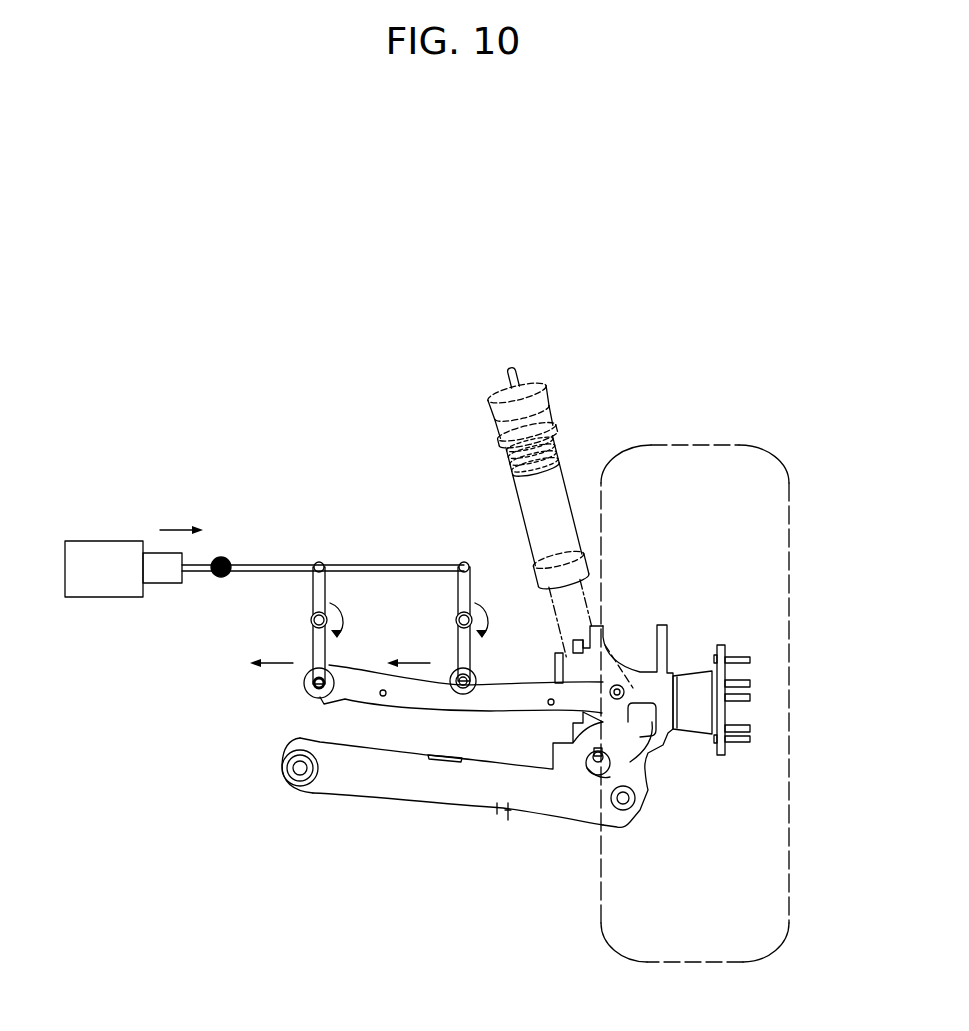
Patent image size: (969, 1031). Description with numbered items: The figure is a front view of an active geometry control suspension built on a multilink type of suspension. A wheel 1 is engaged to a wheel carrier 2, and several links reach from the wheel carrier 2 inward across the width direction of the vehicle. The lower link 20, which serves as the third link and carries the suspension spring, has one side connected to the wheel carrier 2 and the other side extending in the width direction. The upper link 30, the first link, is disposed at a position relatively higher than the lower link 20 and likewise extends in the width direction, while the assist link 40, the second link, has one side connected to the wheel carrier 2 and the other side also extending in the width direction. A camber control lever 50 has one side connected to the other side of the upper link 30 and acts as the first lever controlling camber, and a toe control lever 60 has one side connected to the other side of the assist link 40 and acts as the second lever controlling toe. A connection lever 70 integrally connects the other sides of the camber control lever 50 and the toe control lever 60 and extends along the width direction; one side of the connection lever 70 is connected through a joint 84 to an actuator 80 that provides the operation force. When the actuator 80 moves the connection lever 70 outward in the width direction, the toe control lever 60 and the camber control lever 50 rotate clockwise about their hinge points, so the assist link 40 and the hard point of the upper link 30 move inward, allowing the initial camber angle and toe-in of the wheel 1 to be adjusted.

The wheel 1 is at (697, 441).
The wheel carrier 2 is at (675, 672).
The lower link 20 is at (452, 800).
The upper link 30 is at (407, 712).
The assist link 40 is at (533, 678).
The camber control lever 50 is at (292, 603).
The toe control lever 60 is at (440, 603).
The connection lever 70 is at (279, 562).
The actuator 80 is at (103, 541).
The joint 84 is at (213, 580).